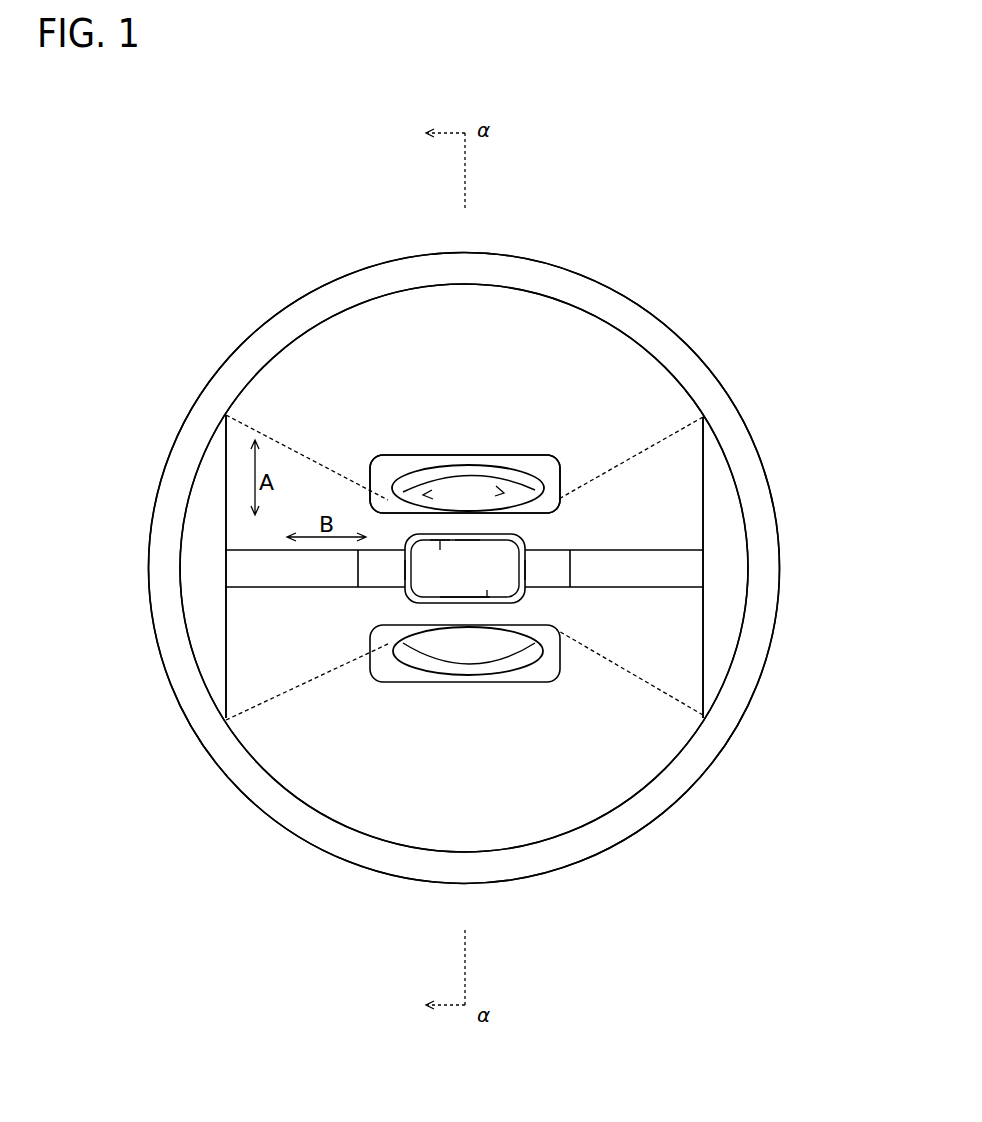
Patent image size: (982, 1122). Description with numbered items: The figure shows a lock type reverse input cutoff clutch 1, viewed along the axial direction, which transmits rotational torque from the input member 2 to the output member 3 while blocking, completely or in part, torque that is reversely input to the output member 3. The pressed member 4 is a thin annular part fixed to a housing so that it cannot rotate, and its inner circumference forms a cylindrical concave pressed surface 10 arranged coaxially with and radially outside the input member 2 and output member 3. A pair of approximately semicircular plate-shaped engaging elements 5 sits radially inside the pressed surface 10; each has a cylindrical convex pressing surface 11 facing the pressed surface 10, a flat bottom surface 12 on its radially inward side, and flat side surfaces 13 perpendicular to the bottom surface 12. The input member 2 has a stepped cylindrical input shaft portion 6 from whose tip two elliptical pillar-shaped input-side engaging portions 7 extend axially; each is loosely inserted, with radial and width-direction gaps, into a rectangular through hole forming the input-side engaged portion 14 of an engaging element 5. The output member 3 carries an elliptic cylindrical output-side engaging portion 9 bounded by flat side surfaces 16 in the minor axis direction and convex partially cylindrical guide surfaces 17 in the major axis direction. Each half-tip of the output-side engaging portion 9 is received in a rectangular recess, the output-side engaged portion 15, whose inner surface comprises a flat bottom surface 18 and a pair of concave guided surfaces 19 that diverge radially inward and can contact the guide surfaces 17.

The reverse input cutoff clutch 1 is at (622, 240).
The input member 2 is at (558, 458).
The output member 3 is at (530, 597).
The pressed member 4 is at (562, 264).
The engaging elements 5 is at (313, 357).
The input shaft portion 6 is at (530, 584).
The input-side engaging portions 7 is at (503, 470).
The output-side engaging portion 9 is at (445, 680).
The pressed surface 10 is at (632, 345).
The pressing surface 11 is at (268, 355).
The bottom surface 12 is at (253, 553).
The side surfaces 13 is at (222, 488).
The input-side engaged portion 14 is at (393, 488).
The output-side engaged portion 15 is at (470, 532).
The side surfaces 16 is at (450, 532).
The guide surfaces 17 is at (403, 570).
The bottom surface 18 is at (442, 532).
The guided surfaces 19 is at (226, 412).